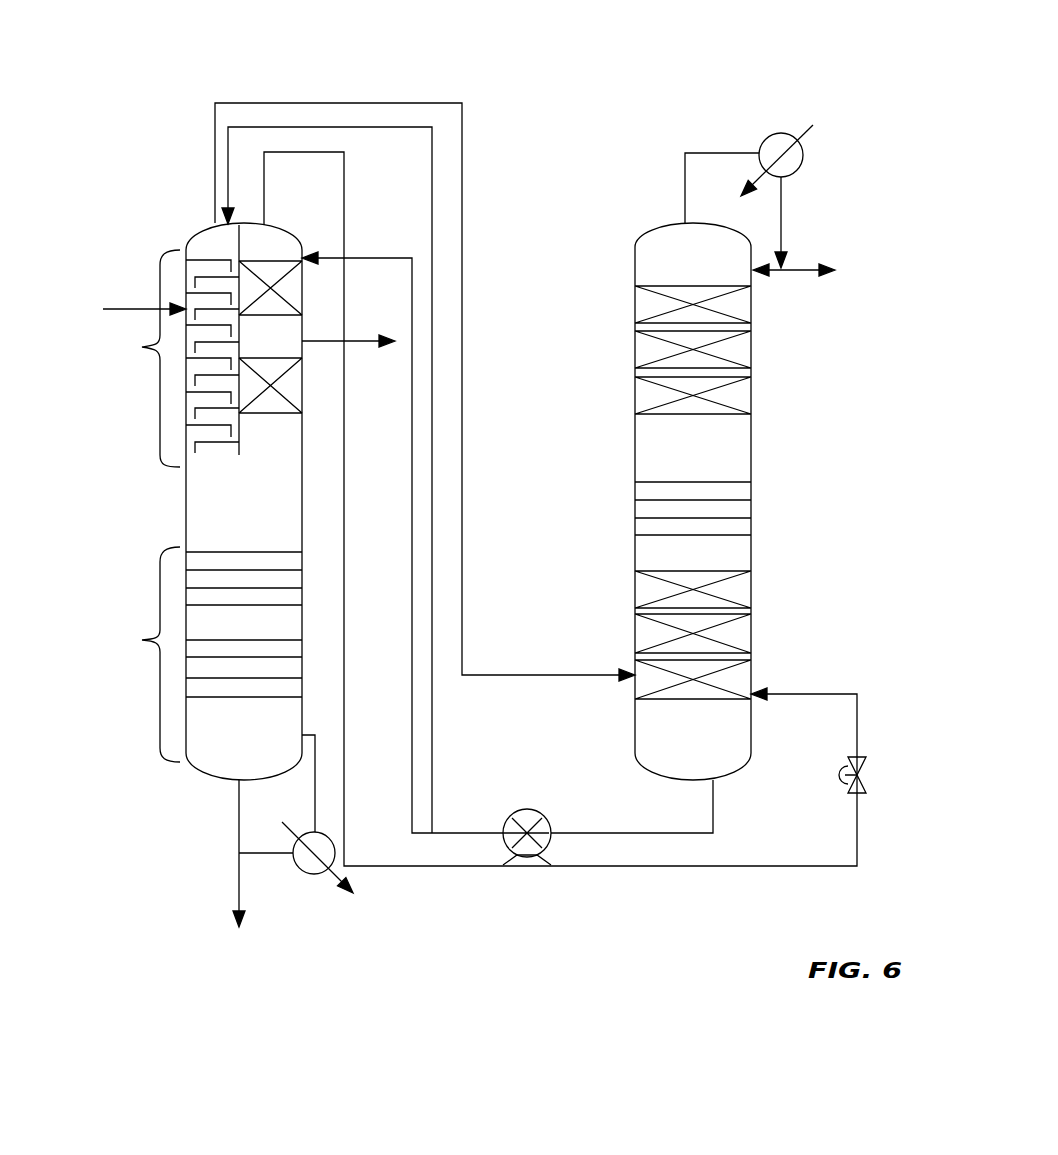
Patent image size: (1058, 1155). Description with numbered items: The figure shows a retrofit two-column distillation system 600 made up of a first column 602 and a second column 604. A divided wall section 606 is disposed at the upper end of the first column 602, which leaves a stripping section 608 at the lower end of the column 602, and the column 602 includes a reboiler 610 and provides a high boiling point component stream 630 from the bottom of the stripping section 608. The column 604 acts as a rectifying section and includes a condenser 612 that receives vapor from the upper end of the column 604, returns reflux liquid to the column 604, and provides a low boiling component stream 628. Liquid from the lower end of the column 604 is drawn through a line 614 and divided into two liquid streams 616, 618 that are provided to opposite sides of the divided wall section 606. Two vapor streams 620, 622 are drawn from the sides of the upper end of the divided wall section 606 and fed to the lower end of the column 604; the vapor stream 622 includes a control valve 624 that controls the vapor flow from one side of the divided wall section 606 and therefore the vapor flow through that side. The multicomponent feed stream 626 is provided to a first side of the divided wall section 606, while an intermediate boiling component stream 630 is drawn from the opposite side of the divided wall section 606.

The system 600 is at (586, 66).
The first column 602 is at (187, 518).
The column 604 is at (634, 482).
The divided wall section 606 is at (193, 346).
The stripping section 608 is at (199, 654).
The reboiler 610 is at (313, 875).
The condenser 612 is at (800, 169).
The line 614 is at (602, 834).
The liquid stream 616 is at (432, 790).
The liquid stream 618 is at (412, 732).
The vapor stream 620 is at (427, 103).
The vapor stream 622 is at (280, 152).
The control valve 624 is at (862, 772).
The multicomponent stream 626 is at (136, 308).
The low boiling component stream 628 is at (793, 270).
The high boiling point component stream / intermediate boiling component stream 630 is at (352, 342).